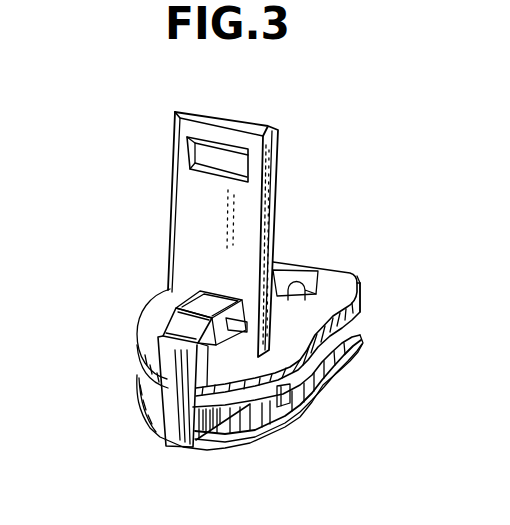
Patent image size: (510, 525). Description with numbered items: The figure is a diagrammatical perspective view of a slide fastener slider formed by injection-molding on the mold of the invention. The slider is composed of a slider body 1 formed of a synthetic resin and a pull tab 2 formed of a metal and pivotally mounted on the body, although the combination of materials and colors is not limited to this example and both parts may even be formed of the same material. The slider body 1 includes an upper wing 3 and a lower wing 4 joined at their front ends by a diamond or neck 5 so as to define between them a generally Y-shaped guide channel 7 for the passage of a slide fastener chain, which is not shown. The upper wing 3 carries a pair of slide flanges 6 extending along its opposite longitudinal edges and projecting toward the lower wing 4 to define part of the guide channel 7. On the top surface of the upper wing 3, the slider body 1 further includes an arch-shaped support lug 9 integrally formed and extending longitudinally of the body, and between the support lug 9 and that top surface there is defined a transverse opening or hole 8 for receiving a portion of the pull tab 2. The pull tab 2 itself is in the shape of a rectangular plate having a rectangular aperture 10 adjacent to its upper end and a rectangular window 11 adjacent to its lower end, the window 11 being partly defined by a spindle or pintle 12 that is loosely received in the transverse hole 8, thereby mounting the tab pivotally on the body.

The slider body 1 is at (135, 368).
The pull tab 2 is at (276, 140).
The upper wing 3 is at (332, 278).
The lower wing 4 is at (358, 342).
The diamond or neck 5 is at (204, 421).
The slide flanges 6 is at (360, 302).
The guide channel 7 is at (266, 418).
The transverse opening or hole 8 is at (280, 292).
The support lug 9 is at (190, 305).
The rectangular aperture 10 is at (193, 151).
The rectangular window 11 is at (222, 299).
The spindle or pintle 12 is at (230, 338).